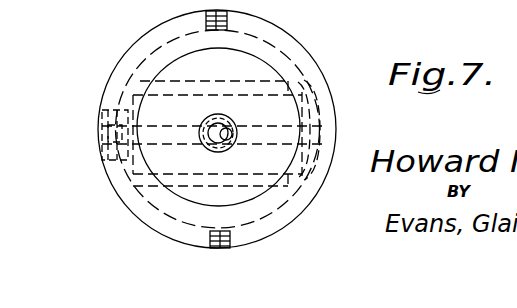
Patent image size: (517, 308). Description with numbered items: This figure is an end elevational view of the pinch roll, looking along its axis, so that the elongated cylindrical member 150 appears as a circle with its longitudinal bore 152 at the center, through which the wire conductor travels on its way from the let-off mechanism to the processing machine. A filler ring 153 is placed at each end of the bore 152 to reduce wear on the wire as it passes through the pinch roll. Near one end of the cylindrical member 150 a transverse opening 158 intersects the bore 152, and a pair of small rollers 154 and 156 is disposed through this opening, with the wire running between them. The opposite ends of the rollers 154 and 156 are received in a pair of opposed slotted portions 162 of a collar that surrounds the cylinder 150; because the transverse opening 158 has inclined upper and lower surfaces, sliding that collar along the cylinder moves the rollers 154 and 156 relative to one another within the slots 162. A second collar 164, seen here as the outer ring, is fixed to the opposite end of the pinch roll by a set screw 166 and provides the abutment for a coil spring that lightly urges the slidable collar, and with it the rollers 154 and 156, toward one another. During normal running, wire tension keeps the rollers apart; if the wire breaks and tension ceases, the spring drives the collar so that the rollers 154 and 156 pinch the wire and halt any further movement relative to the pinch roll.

The elongated cylindrical member 150 is at (146, 3).
The longitudinal bore 152 is at (232, 143).
The filler ring 153 is at (205, 118).
The small roller 154 is at (300, 88).
The small roller 156 is at (150, 160).
The transverse opening 158 is at (210, 119).
The slotted portions 162 is at (195, 114).
The second collar 164 is at (217, 129).
The set screw 166 is at (101, 115).